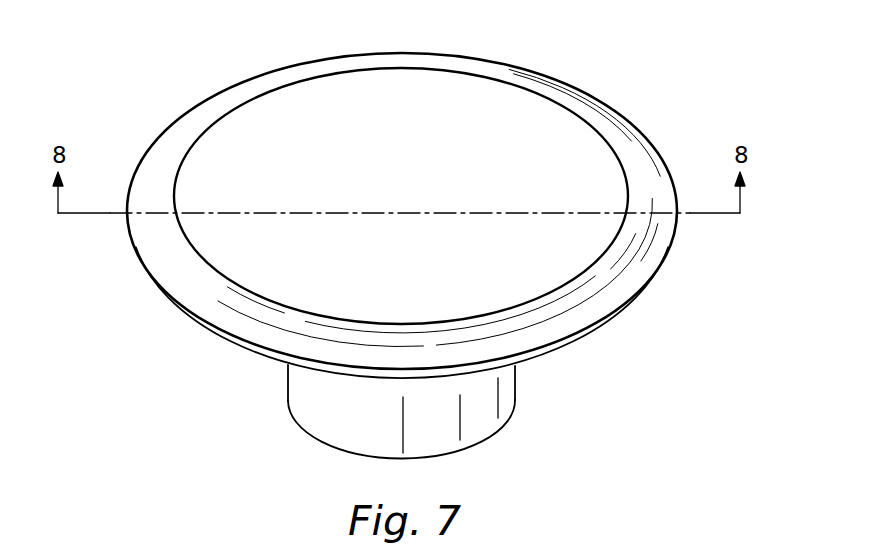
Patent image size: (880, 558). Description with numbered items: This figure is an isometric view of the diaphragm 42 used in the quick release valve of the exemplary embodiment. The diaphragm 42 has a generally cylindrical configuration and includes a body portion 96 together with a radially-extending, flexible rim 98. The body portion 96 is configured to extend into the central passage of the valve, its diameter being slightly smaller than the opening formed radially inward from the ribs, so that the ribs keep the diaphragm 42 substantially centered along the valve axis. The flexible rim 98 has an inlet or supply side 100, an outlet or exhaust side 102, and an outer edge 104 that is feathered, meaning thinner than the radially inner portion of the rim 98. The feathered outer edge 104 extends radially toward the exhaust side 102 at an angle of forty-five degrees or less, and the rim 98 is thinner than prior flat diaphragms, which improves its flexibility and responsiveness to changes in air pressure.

The diaphragm 42 is at (134, 114).
The body portion 96 is at (473, 412).
The flexible rim 98 is at (535, 70).
The supply side 100 is at (579, 357).
The exhaust side 102 is at (365, 126).
The outer edge 104 is at (600, 117).